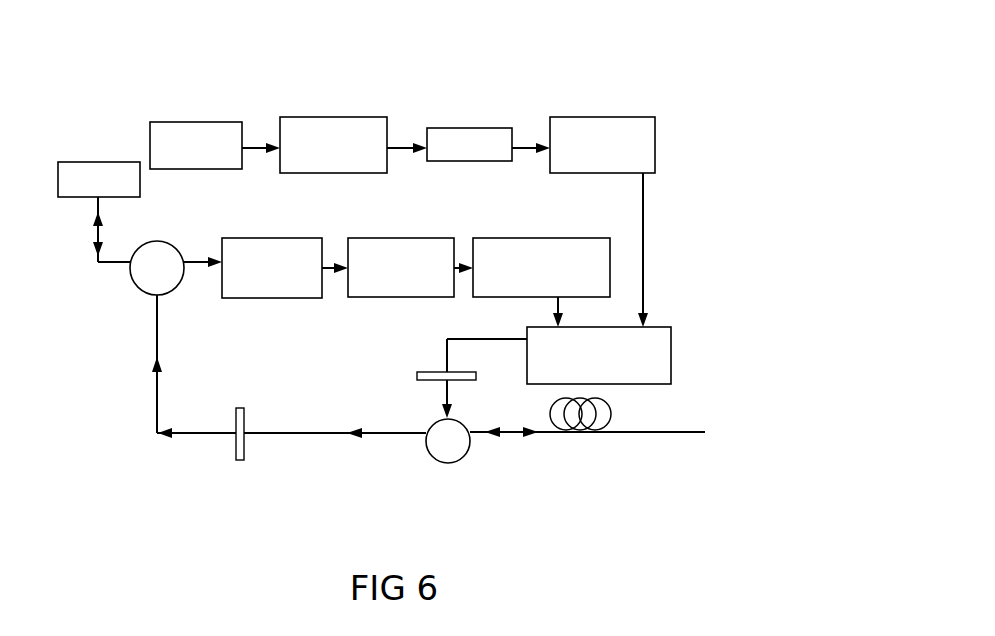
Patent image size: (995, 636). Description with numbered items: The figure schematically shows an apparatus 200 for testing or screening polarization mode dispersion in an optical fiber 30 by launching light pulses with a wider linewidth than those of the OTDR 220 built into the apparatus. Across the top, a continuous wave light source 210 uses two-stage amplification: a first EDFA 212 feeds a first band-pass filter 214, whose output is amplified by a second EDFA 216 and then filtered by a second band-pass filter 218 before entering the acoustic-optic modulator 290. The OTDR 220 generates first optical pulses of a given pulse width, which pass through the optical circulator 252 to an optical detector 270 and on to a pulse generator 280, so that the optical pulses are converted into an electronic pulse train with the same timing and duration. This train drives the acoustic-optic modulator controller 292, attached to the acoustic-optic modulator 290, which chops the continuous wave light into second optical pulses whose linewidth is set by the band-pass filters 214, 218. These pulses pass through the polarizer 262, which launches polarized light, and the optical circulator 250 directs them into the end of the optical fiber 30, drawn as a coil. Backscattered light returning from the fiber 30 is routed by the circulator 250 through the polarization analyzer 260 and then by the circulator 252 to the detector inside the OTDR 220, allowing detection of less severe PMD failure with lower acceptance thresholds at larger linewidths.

The apparatus 200 is at (103, 87).
The continuous wave light source 210 is at (642, 80).
The first EDFA 212 is at (196, 145).
The first band-pass filter 214 is at (333, 145).
The second EDFA 216 is at (469, 144).
The second band-pass filter 218 is at (602, 145).
The OTDR 220 is at (99, 179).
The optical circulator 250 is at (471, 458).
The optical circulator 252 is at (131, 275).
The polarization analyzer 260 is at (240, 472).
The polarizer 262 is at (427, 368).
The optical detector 270 is at (272, 268).
The pulse generator 280 is at (401, 267).
The acoustic-optic modulator 290 is at (599, 355).
The acoustic-optic modulator controller 292 is at (541, 267).
The optical fiber 30 is at (580, 447).